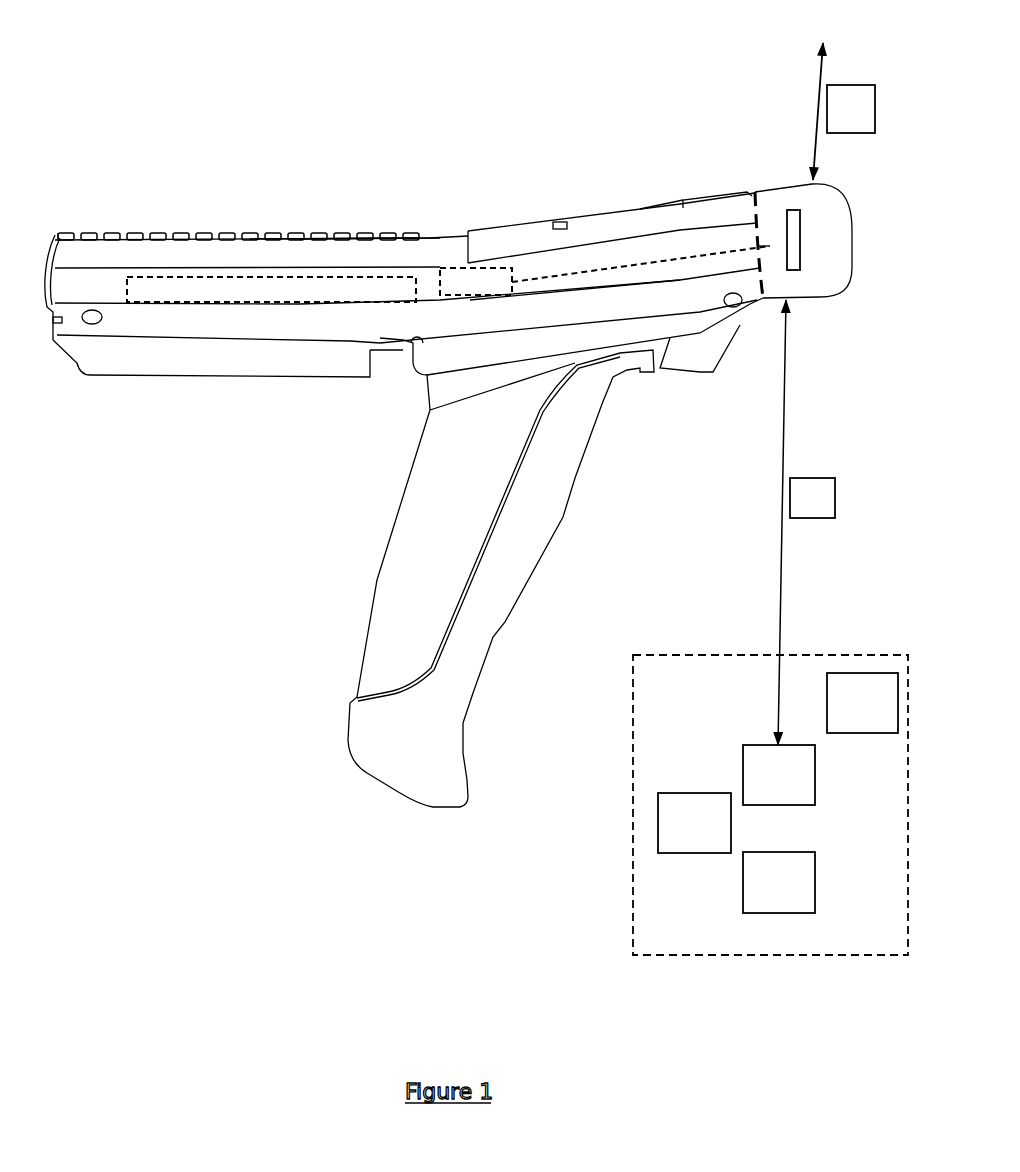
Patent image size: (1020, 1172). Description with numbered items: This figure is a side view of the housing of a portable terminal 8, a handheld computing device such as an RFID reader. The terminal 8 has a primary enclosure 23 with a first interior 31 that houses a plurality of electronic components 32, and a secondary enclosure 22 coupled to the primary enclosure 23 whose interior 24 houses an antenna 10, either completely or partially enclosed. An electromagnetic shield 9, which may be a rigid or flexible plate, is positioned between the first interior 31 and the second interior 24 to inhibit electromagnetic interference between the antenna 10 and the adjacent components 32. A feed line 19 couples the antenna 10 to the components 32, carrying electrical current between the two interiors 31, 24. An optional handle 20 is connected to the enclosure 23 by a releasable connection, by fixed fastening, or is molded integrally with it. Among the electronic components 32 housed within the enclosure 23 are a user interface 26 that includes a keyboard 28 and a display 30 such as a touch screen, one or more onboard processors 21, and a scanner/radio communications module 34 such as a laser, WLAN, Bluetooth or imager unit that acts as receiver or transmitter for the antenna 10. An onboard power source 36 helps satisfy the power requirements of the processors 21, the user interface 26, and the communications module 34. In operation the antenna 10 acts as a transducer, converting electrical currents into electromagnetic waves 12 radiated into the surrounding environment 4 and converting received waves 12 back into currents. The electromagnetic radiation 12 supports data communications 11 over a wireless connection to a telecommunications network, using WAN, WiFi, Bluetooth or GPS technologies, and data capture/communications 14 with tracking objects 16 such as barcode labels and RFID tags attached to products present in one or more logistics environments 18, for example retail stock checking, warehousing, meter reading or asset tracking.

The surrounding environment 4 is at (151, 47).
The portable terminal 8 is at (187, 607).
The EM shield 9 is at (769, 247).
The antenna 10 is at (800, 248).
The data communications 11 is at (863, 124).
The electromagnetic radiation 12 is at (813, 103).
The data capture/communications 14 is at (824, 510).
The tracking objects 16 is at (874, 714).
The logistics environment 18 is at (872, 936).
The feed line 19 is at (558, 277).
The handle 20 is at (343, 763).
The onboard processor 21 is at (440, 115).
The secondary enclosure 22 is at (775, 183).
The enclosure 23 is at (667, 173).
The interior of the secondary enclosure 24 is at (828, 218).
The user interface 26 is at (438, 210).
The keyboard 28 is at (247, 233).
The display 30 is at (620, 212).
The first interior 31 is at (617, 253).
The electronic components 32 is at (343, 148).
The scanner/radio communications module 34 is at (488, 283).
The onboard power source 36 is at (272, 352).